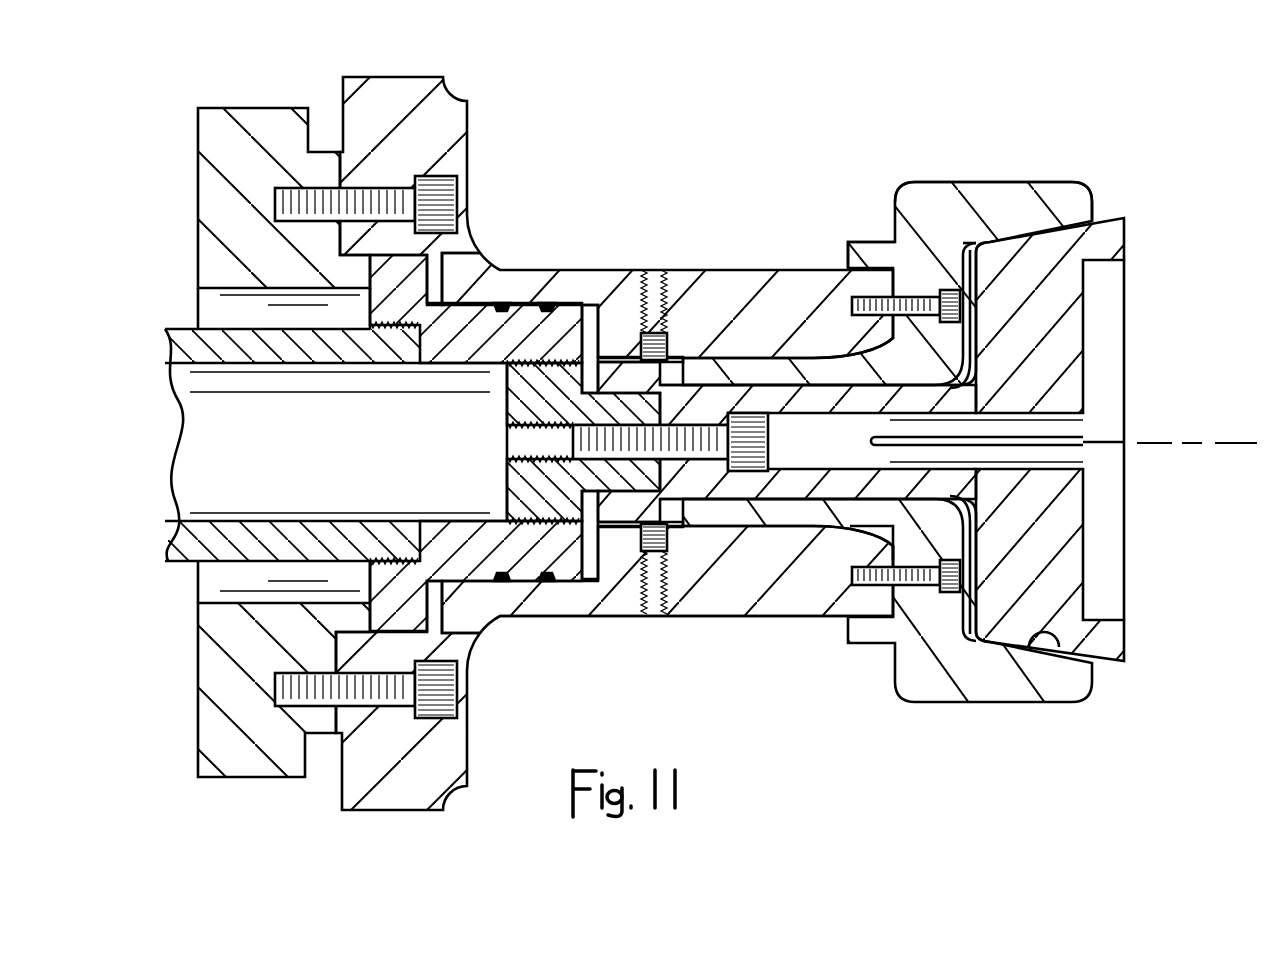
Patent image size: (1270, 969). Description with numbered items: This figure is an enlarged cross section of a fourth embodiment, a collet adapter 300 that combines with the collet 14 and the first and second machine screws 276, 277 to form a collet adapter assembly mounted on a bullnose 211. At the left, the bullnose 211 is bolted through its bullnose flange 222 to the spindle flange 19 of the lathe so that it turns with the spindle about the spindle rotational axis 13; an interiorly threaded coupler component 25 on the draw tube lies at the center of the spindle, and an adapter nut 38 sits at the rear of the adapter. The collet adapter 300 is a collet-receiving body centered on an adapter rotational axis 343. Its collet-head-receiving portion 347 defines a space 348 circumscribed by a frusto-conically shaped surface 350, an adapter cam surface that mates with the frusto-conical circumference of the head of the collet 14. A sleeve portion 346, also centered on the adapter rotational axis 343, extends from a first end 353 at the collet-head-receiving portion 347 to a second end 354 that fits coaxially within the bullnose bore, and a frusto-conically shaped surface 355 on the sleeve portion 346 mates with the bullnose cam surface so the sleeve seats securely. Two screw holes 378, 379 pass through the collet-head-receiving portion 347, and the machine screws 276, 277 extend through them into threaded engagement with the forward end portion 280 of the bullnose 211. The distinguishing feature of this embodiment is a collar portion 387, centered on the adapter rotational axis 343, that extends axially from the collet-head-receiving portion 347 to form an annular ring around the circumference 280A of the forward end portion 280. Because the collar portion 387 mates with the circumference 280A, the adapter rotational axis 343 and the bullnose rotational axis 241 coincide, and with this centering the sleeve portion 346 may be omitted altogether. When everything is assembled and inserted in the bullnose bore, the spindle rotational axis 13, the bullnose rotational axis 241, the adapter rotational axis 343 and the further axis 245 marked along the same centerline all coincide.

The spindle flange 19 is at (268, 123).
The flange block 222 is at (458, 112).
The coupler component 25 is at (483, 315).
The adapter nut 38 is at (538, 510).
The second end of the sleeve portion 354 is at (607, 513).
The bullnose rotational axis 241 is at (946, 416).
The second machine screw 277 is at (960, 316).
The channel wall 245 is at (949, 545).
The adapter rotational axis 343 is at (1100, 587).
The forward end portion of the bullnose 280 is at (858, 287).
The circumference of the forward end portion 280A is at (838, 620).
The frusto-conically shaped surface on the sleeve portion 355 is at (810, 628).
The bullnose 211 is at (681, 267).
The sleeve portion 346 is at (732, 513).
The first machine screw 276 is at (1012, 470).
The collet adapter 300 is at (896, 182).
The collet-head-receiving portion 347 is at (1042, 188).
The collar portion 387 is at (857, 242).
The collet 14 is at (1125, 216).
The second screw hole 379 is at (973, 300).
The space 348 is at (967, 238).
The first screw hole 378 is at (968, 580).
The first end of the sleeve portion 353 is at (908, 522).
The frusto-conically shaped surface 350 is at (1047, 633).
The spindle rotational axis 13 is at (1235, 447).